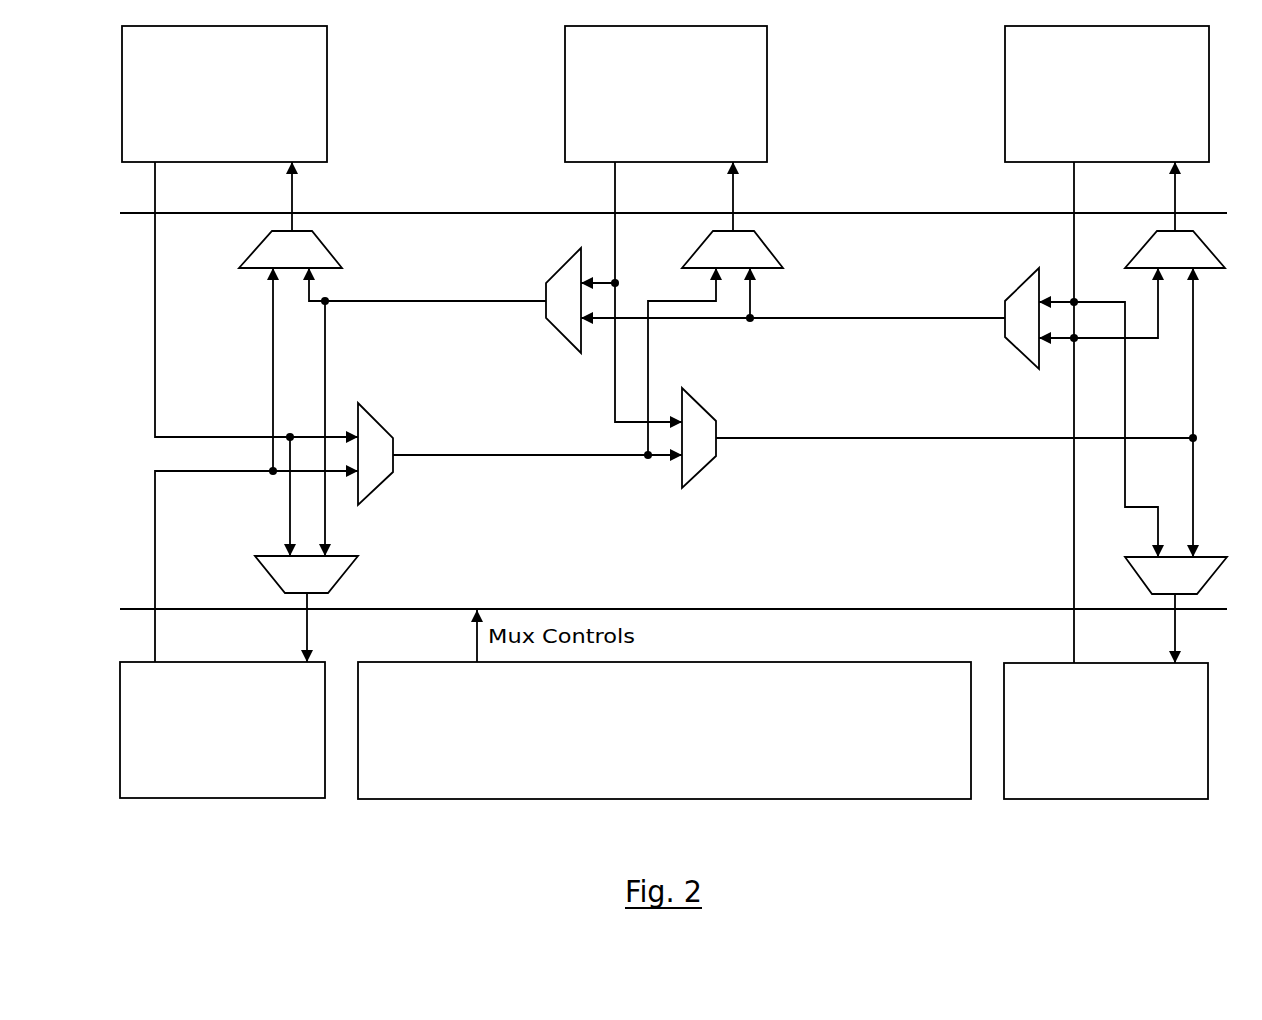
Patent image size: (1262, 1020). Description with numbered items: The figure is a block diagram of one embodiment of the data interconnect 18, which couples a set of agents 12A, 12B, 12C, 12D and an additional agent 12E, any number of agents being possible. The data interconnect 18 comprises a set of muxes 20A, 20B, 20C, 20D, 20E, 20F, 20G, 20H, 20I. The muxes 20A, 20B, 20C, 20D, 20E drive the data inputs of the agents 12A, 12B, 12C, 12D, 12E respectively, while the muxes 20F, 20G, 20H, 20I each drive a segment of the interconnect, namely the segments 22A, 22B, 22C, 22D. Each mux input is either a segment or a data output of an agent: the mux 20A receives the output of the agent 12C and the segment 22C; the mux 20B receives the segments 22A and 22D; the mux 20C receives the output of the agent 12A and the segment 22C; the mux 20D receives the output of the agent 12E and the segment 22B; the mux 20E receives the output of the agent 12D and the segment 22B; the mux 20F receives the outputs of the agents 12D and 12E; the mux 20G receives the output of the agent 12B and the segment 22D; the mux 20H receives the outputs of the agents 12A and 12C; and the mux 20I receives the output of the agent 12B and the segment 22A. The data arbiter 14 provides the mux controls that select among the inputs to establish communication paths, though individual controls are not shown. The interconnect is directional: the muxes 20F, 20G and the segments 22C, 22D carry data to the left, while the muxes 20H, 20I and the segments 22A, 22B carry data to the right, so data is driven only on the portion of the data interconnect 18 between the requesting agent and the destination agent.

The agent 12A is at (281, 105).
The agent 12B is at (723, 105).
The agent 12C is at (280, 742).
The agent 12D is at (1165, 743).
The agent 12E is at (1163, 105).
The data arbiter 14 is at (747, 744).
The data interconnect 18 is at (783, 597).
The mux 20A is at (313, 264).
The mux 20B is at (756, 264).
The mux 20C is at (329, 587).
The mux 20D is at (1198, 589).
The mux 20E is at (1196, 264).
The mux 20F is at (963, 340).
The mux 20G is at (501, 307).
The mux 20H is at (425, 440).
The mux 20I is at (635, 464).
The segment 22A is at (537, 480).
The segment 22B is at (956, 466).
The segment 22C is at (424, 285).
The segment 22D is at (793, 346).